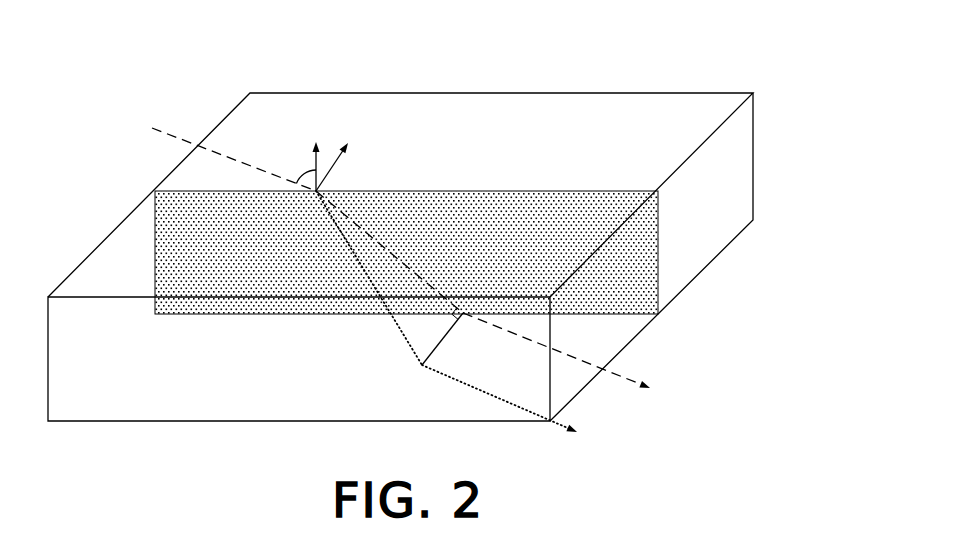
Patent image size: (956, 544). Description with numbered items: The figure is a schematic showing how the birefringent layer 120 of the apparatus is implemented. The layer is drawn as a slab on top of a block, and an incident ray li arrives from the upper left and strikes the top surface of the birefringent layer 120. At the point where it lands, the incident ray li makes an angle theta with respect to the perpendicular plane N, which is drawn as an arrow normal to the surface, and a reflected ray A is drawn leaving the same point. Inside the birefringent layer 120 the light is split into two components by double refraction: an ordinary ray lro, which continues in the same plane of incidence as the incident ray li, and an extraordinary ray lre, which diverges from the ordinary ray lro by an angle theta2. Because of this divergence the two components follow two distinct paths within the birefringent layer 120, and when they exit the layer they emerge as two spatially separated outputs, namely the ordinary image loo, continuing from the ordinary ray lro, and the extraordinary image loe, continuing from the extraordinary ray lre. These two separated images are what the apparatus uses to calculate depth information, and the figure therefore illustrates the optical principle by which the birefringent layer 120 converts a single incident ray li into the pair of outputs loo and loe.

The birefringent layer 120 is at (734, 70).
The perpendicular plane N is at (318, 146).
The reflected ray A is at (341, 146).
The angle of incidence theta is at (300, 164).
The divergence angle theta2 is at (417, 305).
The incident ray li is at (234, 151).
The ordinary ray lro is at (389, 252).
The extraordinary ray lre is at (355, 278).
The ordinary image loo is at (556, 352).
The extraordinary image loe is at (480, 398).